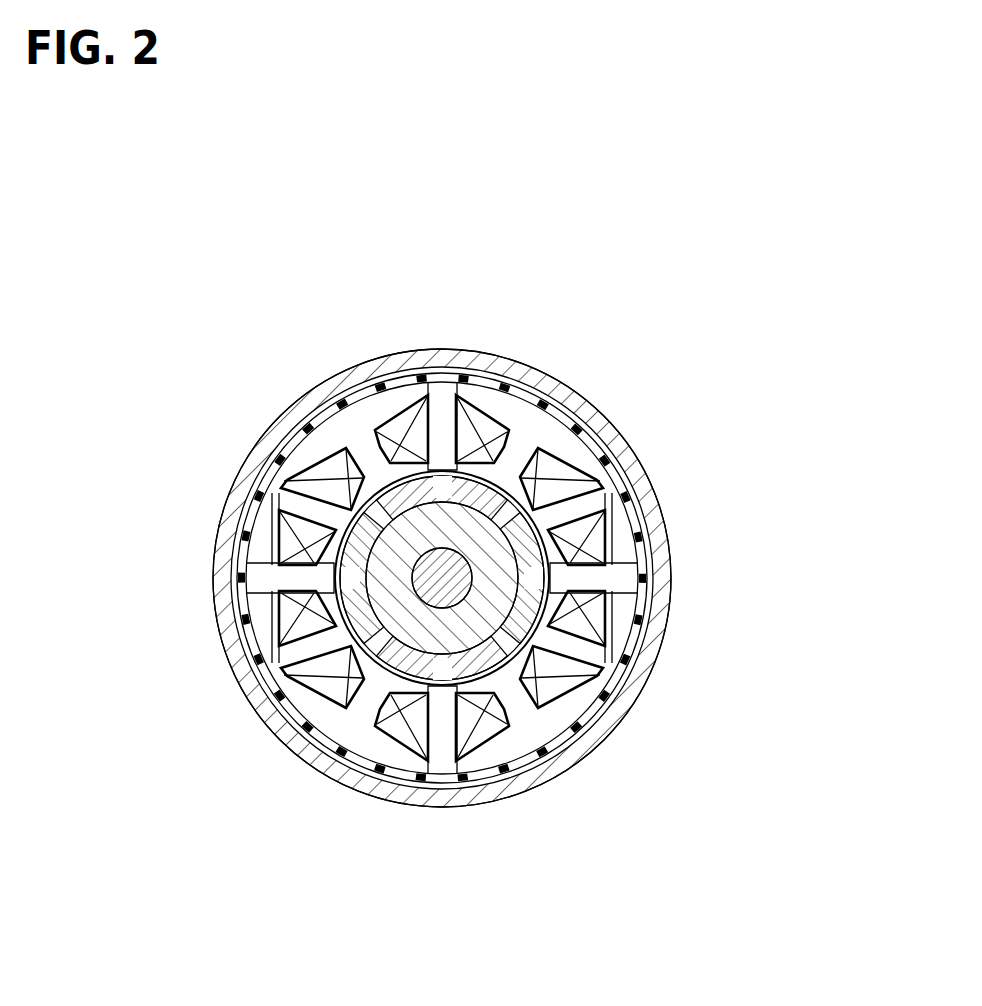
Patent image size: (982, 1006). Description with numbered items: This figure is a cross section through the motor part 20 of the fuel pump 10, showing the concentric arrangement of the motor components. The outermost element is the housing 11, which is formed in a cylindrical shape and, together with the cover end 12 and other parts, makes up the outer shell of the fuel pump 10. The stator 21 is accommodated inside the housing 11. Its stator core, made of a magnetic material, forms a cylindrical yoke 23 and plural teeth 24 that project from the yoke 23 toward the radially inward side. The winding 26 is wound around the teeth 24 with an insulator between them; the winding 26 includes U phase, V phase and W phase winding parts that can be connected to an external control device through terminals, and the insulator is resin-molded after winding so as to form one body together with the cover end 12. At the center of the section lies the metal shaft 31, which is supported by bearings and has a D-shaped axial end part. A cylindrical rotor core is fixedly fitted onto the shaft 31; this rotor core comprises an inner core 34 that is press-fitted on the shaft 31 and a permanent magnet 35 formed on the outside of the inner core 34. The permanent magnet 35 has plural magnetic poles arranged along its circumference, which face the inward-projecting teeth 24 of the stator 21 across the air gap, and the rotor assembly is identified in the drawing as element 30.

The fuel pump 10 is at (442, 533).
The housing 11 is at (488, 578).
The cover end 12 is at (407, 578).
The motor part 20 is at (437, 572).
The stator 21 is at (473, 578).
The yoke 23 is at (483, 535).
The teeth 24 is at (393, 606).
The winding 26 is at (437, 588).
The rotor 30 is at (427, 664).
The shaft 31 is at (258, 748).
The inner core 34 is at (486, 812).
The permanent magnet 35 is at (470, 347).